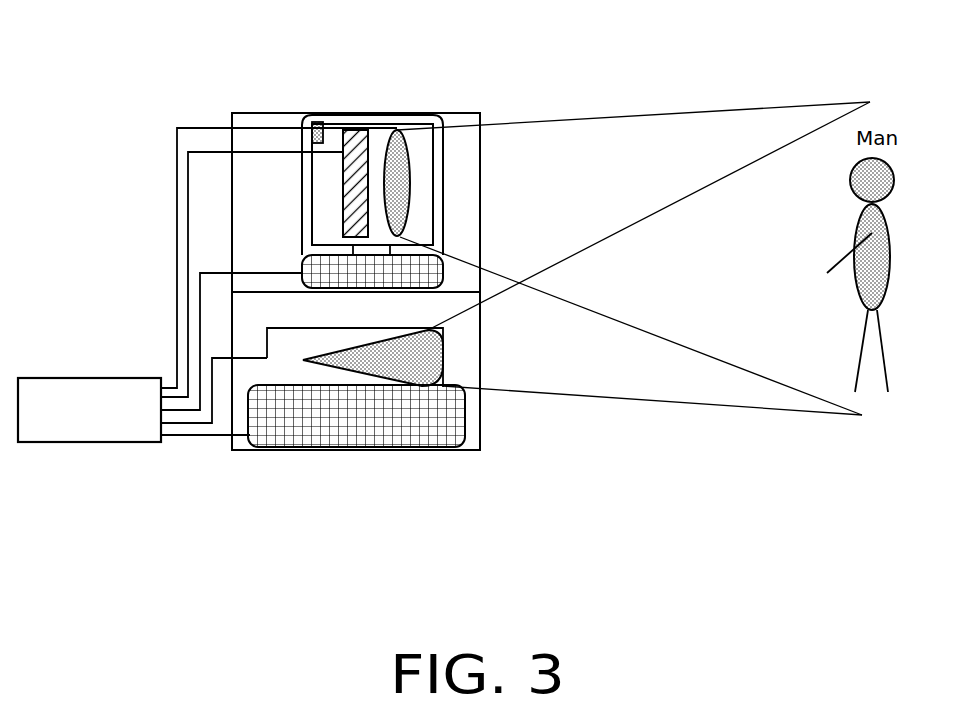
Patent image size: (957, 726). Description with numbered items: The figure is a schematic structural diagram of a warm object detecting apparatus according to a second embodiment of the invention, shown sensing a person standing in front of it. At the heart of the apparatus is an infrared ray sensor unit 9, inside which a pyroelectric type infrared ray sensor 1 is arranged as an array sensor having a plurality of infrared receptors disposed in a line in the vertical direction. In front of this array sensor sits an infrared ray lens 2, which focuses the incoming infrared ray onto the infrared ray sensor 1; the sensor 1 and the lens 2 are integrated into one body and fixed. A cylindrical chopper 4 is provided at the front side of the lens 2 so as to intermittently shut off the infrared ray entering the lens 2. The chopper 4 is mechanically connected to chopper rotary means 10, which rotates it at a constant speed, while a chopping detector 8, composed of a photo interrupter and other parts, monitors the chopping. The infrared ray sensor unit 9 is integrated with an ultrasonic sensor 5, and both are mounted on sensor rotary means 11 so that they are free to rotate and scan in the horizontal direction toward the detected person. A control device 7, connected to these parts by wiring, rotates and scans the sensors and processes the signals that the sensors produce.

The pyroelectric type infrared ray sensor 1 is at (355, 128).
The infrared ray lens 2 is at (410, 147).
The cylindrical chopper 4 is at (305, 205).
The ultrasonic sensor 5 is at (445, 360).
The control device 7 is at (142, 412).
The chopping detector 8 is at (310, 112).
The infrared ray sensor unit 9 is at (238, 110).
The chopper rotary means 10 is at (325, 267).
The sensor rotary means 11 is at (340, 417).